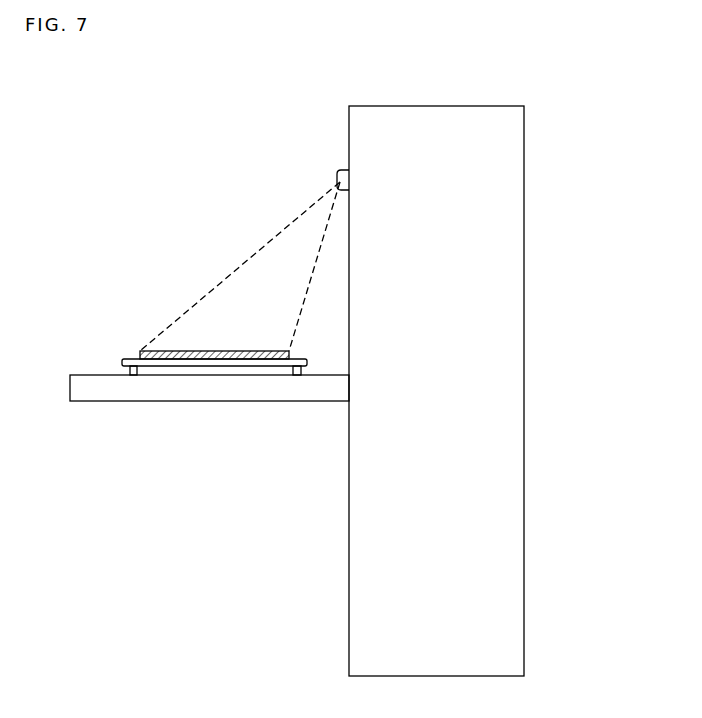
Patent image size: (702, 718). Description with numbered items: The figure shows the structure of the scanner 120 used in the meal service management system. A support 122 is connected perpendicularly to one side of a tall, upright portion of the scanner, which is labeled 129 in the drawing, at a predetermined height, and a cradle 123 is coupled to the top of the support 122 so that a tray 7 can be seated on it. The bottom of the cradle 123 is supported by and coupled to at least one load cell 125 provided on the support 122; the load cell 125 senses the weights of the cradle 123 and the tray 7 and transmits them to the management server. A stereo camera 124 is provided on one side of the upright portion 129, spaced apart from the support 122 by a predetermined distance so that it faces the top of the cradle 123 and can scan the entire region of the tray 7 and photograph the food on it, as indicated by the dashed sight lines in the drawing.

The scanner 120 is at (146, 178).
The support 122 is at (102, 390).
The cradle 123 is at (127, 358).
The stereo camera 124 is at (338, 170).
The load cell 125 is at (125, 373).
The support column 129 is at (513, 259).
The tray 7 is at (173, 351).